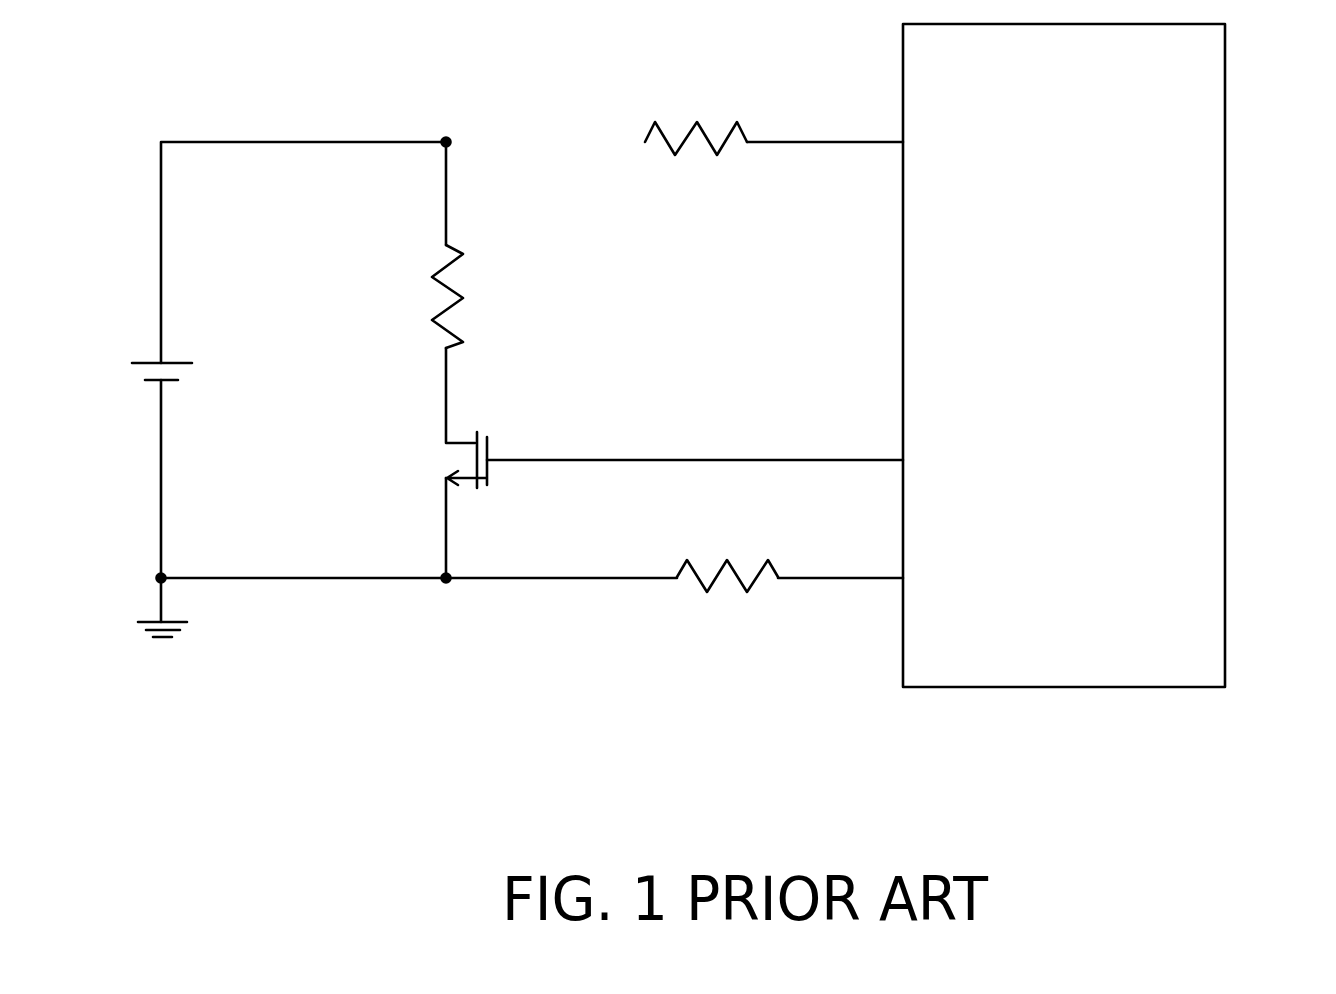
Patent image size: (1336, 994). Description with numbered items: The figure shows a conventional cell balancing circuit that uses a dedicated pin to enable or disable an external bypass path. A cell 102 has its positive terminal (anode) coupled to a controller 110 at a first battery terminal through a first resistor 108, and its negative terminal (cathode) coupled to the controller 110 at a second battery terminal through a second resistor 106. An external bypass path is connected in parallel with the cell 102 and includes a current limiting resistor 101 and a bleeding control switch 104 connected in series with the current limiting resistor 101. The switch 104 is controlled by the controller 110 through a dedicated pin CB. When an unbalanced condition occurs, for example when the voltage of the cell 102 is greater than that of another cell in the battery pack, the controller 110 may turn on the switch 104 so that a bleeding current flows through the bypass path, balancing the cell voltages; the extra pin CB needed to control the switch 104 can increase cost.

The current limiting resistor 101 is at (455, 348).
The cell 102 is at (170, 382).
The bleeding control switch 104 is at (495, 473).
The second resistor 106 is at (758, 577).
The first resistor 108 is at (725, 141).
The controller 110 is at (1228, 333).